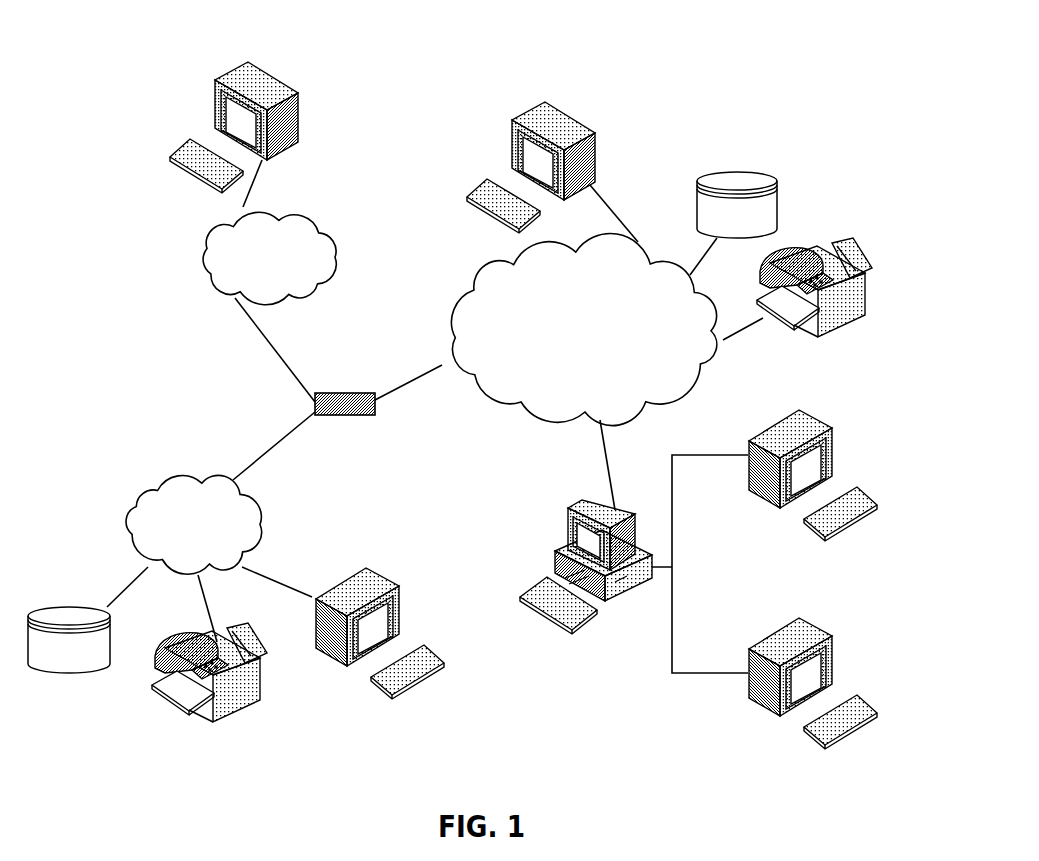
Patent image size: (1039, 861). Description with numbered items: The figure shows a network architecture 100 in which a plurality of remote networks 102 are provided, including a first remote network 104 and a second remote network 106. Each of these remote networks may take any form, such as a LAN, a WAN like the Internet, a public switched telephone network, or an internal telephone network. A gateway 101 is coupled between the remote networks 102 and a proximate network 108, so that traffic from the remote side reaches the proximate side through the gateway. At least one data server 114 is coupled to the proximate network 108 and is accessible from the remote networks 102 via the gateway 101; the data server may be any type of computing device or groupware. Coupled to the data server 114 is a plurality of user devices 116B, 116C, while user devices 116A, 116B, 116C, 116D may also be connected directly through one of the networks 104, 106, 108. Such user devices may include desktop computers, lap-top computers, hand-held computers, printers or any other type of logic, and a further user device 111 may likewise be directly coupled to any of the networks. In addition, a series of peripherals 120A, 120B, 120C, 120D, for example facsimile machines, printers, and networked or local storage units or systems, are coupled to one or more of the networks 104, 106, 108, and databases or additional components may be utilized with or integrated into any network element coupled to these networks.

The architecture 100 is at (157, 47).
The gateway 101 is at (330, 393).
The remote networks 102 is at (183, 311).
The first remote network 104 is at (120, 500).
The second remote network 106 is at (338, 236).
The proximate network 108 is at (685, 397).
The user device 111 is at (597, 134).
The data server 114 is at (568, 519).
The user device 116A is at (300, 100).
The user device 116B is at (832, 450).
The user device 116C is at (832, 660).
The user device 116D is at (398, 604).
The peripheral 120A is at (237, 703).
The peripheral 120B is at (70, 672).
The peripheral 120C is at (778, 182).
The peripheral 120D is at (862, 248).